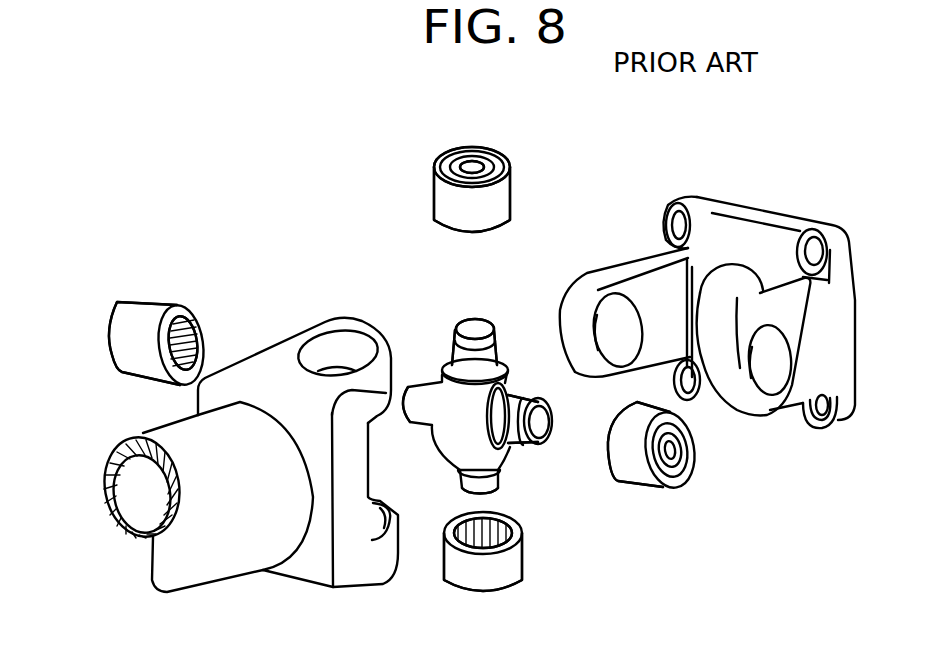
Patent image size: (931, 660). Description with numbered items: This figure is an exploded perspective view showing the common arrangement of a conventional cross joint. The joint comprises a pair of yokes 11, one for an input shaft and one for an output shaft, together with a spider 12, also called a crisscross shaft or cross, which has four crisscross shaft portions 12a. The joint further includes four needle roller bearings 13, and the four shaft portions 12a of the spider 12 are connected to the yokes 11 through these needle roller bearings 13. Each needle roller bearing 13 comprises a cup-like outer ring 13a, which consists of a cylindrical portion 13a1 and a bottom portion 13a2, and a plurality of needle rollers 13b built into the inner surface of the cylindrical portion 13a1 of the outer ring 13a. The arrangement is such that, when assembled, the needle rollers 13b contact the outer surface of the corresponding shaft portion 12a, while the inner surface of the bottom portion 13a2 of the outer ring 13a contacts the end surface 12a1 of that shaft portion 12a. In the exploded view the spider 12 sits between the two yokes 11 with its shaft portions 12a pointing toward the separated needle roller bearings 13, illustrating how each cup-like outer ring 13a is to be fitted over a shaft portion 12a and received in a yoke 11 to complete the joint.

The yoke 11 is at (278, 348).
The spider 12 is at (424, 318).
The shaft portion 12a is at (500, 343).
The end surface 12a1 is at (473, 325).
The needle roller bearing 13 is at (422, 190).
The outer ring 13a is at (499, 200).
The cylindrical portion 13a1 is at (432, 205).
The bottom portion 13a2 is at (485, 163).
The needle rollers 13b is at (510, 525).